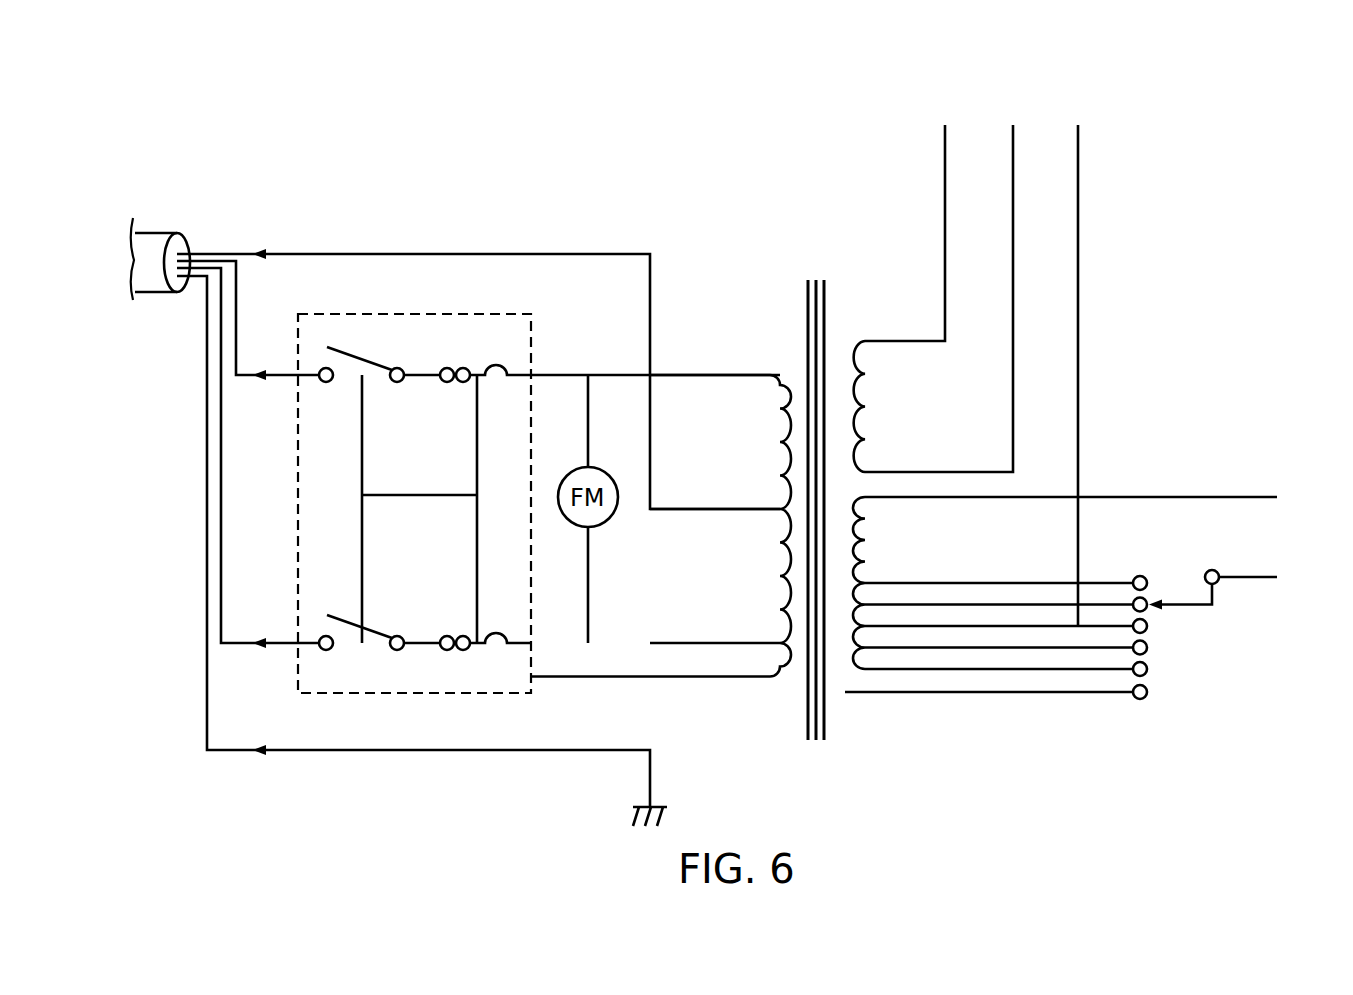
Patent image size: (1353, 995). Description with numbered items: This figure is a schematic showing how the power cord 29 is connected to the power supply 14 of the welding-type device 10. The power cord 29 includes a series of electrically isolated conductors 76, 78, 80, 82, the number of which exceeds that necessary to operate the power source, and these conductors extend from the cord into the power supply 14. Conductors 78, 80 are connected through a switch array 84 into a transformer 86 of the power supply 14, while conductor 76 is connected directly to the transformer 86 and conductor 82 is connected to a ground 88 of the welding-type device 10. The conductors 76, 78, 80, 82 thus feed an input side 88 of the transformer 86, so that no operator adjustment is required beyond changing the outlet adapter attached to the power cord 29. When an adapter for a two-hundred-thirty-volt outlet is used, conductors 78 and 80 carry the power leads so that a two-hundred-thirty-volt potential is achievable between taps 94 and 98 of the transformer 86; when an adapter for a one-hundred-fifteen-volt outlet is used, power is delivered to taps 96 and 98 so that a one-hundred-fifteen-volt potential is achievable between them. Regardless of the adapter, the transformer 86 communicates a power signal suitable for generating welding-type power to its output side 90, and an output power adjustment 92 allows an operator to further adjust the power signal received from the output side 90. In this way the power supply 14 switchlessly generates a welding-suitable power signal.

The welding-type device 10 is at (907, 86).
The power supply 14 is at (767, 204).
The power cord 29 is at (154, 232).
The conductor 76 is at (221, 250).
The conductor 78 is at (239, 304).
The conductor 80 is at (222, 470).
The conductor 82 is at (207, 510).
The switch array 84 is at (483, 303).
The transformer 86 is at (838, 214).
The ground 88 is at (781, 352).
The output side 90 is at (877, 316).
The output power adjustment 92 is at (1290, 485).
The tap 94 is at (758, 378).
The tap 96 is at (758, 506).
The tap 98 is at (758, 641).